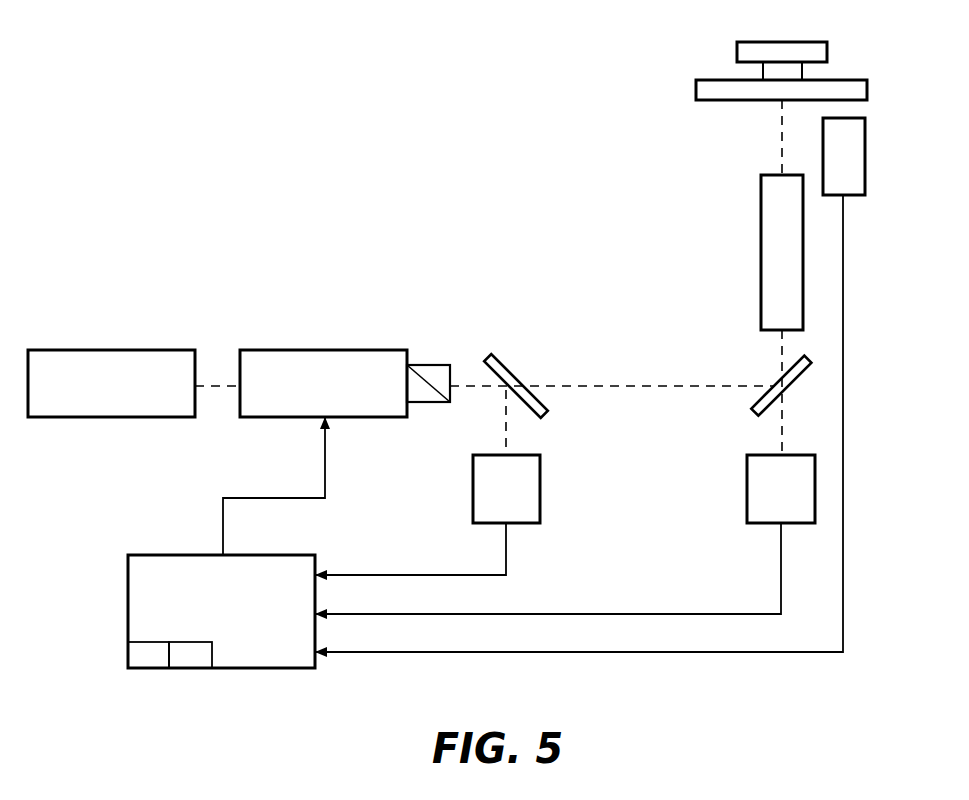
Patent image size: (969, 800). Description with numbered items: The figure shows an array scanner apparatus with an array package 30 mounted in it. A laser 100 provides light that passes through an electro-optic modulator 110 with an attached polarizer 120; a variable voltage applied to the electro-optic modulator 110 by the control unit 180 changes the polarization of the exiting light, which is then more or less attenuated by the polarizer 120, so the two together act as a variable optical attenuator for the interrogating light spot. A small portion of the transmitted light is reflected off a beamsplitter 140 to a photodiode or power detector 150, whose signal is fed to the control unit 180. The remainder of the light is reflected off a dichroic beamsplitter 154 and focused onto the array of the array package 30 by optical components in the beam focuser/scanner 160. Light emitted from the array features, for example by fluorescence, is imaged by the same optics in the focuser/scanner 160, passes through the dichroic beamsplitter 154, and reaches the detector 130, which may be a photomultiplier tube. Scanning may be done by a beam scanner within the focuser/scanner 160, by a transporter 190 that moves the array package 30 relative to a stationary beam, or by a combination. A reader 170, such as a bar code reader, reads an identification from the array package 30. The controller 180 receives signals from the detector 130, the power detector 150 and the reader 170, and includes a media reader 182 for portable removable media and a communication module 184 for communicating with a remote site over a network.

The laser 100 is at (95, 348).
The electro-optic modulator (EOM) 110 is at (315, 348).
The polarizer 120 is at (430, 362).
The beamsplitter 140 is at (519, 368).
The photodiode or power detector 150 is at (540, 480).
The dichroic beamsplitter 154 is at (748, 410).
The detector (PMT) 130 is at (747, 478).
The beam focuser/scanner 160 is at (761, 232).
The reader 170 is at (865, 158).
The transporter 190 is at (827, 52).
The array package 30 is at (867, 88).
The control unit (CU) 180 is at (267, 670).
The media reader 182 is at (125, 652).
The communication module 184 is at (190, 670).